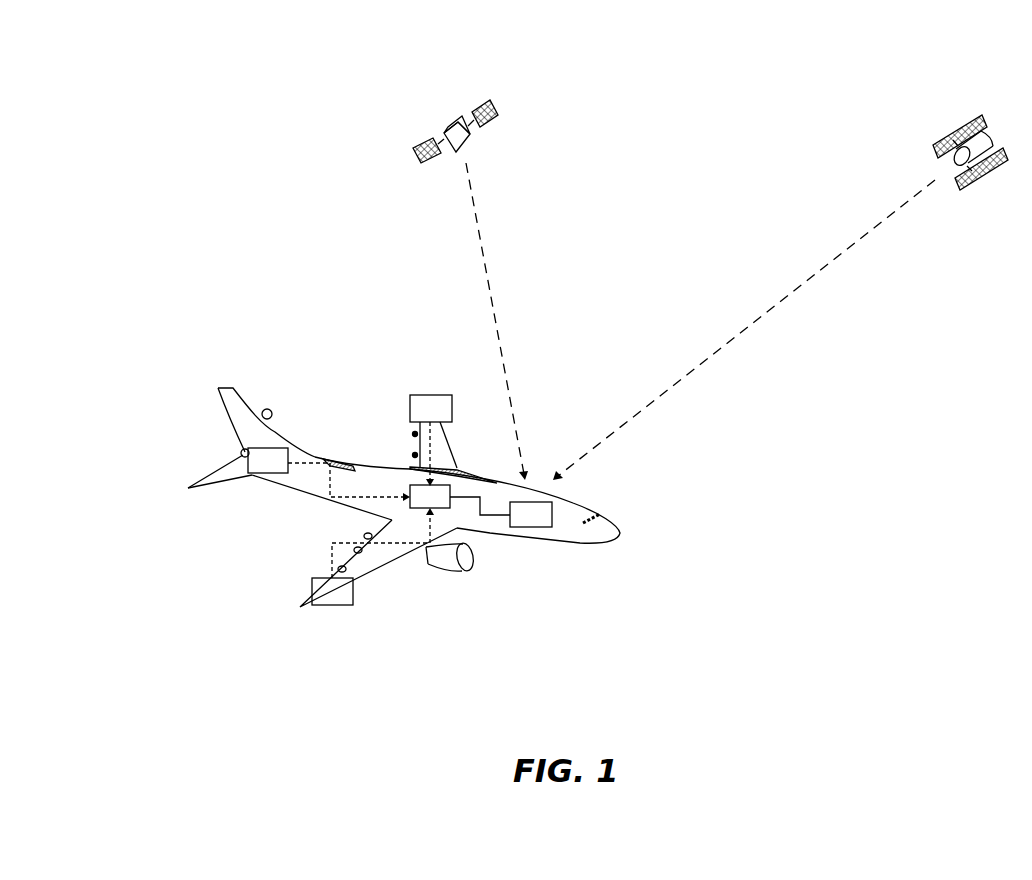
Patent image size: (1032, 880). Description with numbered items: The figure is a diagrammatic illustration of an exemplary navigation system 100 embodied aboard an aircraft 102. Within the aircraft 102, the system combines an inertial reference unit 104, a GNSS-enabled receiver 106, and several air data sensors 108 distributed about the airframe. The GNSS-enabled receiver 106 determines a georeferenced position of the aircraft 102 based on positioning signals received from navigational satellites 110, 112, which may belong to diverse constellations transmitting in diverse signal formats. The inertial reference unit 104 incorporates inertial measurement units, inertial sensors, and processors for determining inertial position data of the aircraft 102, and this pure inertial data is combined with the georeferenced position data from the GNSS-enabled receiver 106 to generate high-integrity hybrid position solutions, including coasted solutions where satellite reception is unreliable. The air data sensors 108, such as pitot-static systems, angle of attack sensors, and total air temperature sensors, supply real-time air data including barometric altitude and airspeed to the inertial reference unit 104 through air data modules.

The navigation system 100 is at (96, 76).
The aircraft 102 is at (273, 480).
The inertial reference unit 104 is at (430, 496).
The GNSS-enabled receiver 106 is at (531, 514).
The air data sensor 108 is at (352, 500).
The navigational satellite 110 is at (453, 126).
The navigational satellite 112 is at (954, 128).